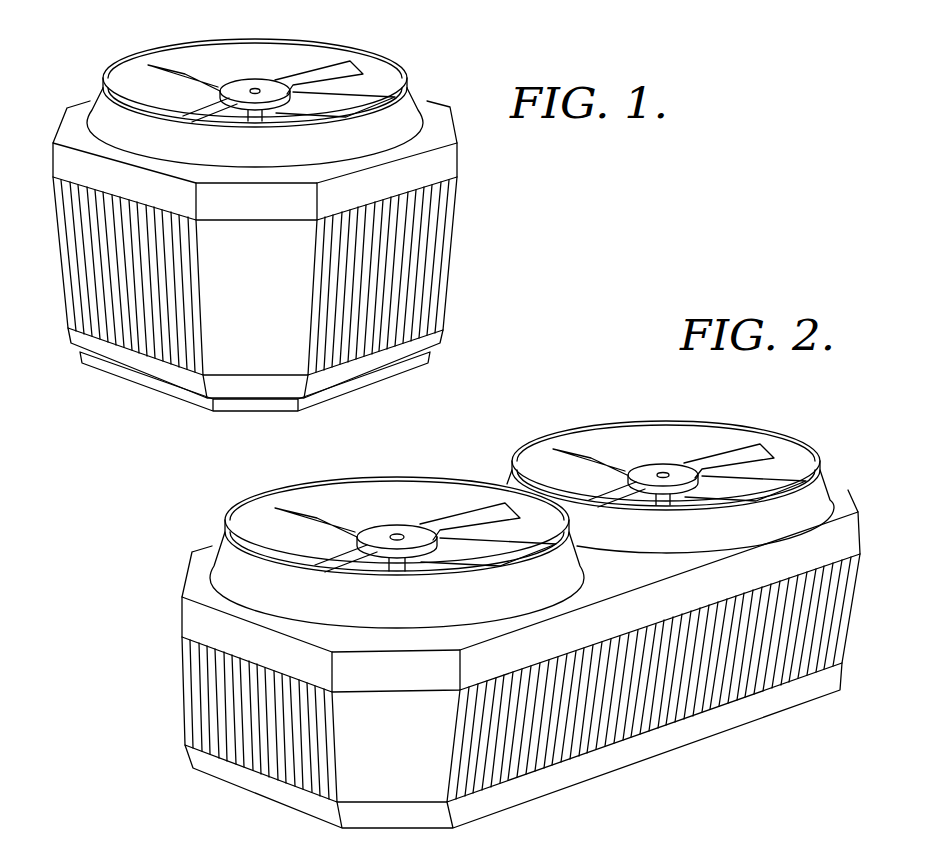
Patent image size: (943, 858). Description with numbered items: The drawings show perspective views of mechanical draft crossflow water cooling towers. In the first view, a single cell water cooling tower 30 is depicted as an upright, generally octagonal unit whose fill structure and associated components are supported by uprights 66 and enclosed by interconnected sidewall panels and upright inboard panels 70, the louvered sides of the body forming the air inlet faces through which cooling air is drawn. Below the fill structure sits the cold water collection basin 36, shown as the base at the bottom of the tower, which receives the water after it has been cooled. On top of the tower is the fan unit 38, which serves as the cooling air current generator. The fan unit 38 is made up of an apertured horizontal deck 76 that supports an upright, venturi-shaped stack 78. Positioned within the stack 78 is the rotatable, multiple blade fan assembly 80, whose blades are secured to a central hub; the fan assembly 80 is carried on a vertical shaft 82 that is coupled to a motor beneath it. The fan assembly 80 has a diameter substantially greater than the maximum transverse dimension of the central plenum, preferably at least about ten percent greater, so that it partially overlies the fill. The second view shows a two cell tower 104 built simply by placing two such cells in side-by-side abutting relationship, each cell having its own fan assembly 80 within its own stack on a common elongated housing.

In FIG. 1, the water cooling tower 30 is at (66, 95).
In FIG. 1, the cold water collection basin 36 is at (180, 408).
In FIG. 1, the fan unit 38 is at (414, 60).
In FIG. 1, the uprights 66 is at (250, 362).
In FIG. 1, the upright inboard panels 70 is at (458, 163).
In FIG. 1, the apertured horizontal deck 76 is at (440, 122).
In FIG. 1, the venturi-shaped stack 78 is at (131, 56).
In FIG. 1, the fan assembly 80 is at (263, 83).
In FIG. 2, the fan assembly 80 is at (467, 518).
In FIG. 1, the vertical shaft 82 is at (257, 116).
In FIG. 2, the two cell tower 104 is at (178, 552).